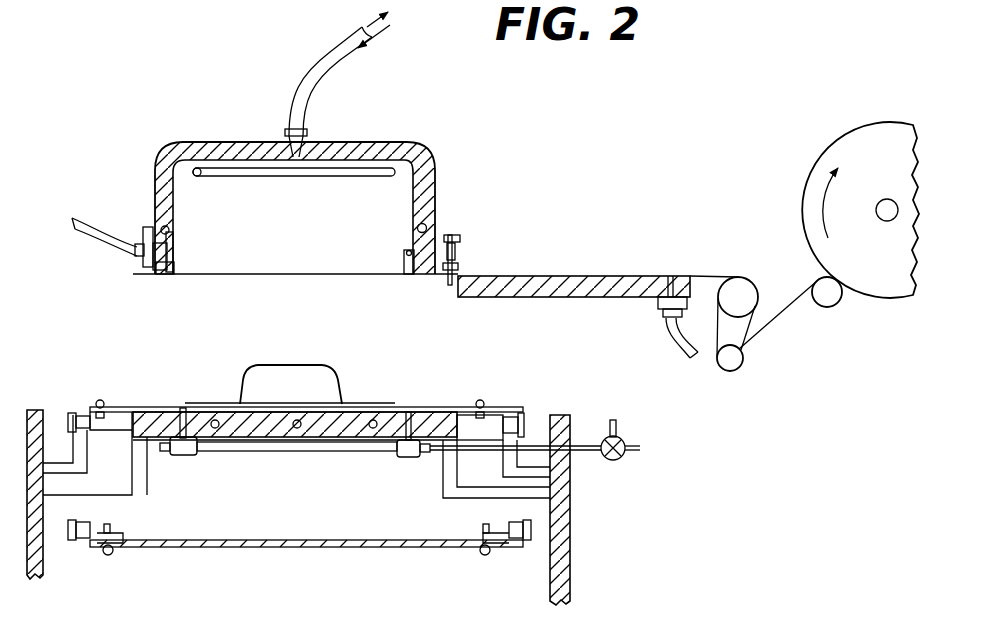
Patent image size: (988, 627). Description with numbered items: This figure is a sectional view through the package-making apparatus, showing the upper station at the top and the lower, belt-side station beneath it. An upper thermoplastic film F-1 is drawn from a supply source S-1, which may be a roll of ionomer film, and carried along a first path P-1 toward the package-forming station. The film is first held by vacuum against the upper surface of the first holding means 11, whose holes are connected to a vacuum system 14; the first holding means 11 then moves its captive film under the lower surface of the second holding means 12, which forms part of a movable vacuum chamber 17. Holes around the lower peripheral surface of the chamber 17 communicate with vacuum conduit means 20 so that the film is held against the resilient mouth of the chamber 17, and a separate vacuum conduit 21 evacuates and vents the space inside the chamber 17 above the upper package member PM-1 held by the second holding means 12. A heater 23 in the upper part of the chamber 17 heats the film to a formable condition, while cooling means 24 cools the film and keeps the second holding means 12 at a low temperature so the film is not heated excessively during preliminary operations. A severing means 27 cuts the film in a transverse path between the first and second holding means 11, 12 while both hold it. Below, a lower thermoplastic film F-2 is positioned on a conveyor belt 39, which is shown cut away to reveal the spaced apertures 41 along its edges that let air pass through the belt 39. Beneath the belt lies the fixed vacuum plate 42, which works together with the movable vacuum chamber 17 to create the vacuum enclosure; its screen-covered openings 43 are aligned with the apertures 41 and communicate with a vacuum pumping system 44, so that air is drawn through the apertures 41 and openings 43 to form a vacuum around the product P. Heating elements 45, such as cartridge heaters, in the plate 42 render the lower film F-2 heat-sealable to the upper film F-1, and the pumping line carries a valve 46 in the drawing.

The first holding means 11 is at (600, 300).
The second holding means 12 is at (162, 279).
The vacuum system 14 is at (683, 355).
The movable vacuum chamber 17 is at (214, 141).
The vacuum conduit means 20 is at (96, 224).
The vacuum conduit 21 is at (307, 72).
The heater 23 is at (211, 179).
The cooling means 24 is at (417, 229).
The severing means 27 is at (451, 234).
The conveyor belt 39 is at (128, 406).
The apertures 41 is at (182, 406).
The fixed vacuum plate 42 is at (265, 428).
The openings 43 is at (420, 413).
The vacuum pumping system 44 is at (586, 453).
The heating elements 45 is at (372, 440).
The valve 46 is at (624, 440).
The upper package member PM-1 is at (206, 275).
The first path P-1 is at (607, 265).
The package P is at (282, 392).
The supply source S-1 is at (858, 173).
The upper thermoplastic film F-1 is at (783, 327).
The lower thermoplastic film F-2 is at (243, 400).